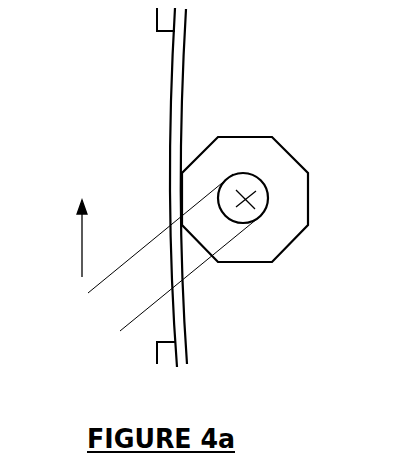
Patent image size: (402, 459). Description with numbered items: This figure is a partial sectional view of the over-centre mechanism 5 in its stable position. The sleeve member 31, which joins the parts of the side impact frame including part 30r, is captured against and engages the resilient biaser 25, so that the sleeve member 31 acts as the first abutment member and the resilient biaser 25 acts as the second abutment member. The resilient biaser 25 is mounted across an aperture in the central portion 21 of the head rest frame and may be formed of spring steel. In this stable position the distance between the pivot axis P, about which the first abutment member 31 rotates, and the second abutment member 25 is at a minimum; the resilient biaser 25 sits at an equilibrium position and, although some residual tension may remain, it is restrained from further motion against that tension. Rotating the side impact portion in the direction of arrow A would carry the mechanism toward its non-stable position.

The over-centre mechanism 5 is at (152, 187).
The central portion 21 is at (163, 15).
The resilient biaser 25 is at (178, 81).
The sleeve member 31 is at (287, 162).
The part of the frame 30r is at (152, 301).
The pivot axis P is at (245, 200).
The arrow A is at (72, 238).